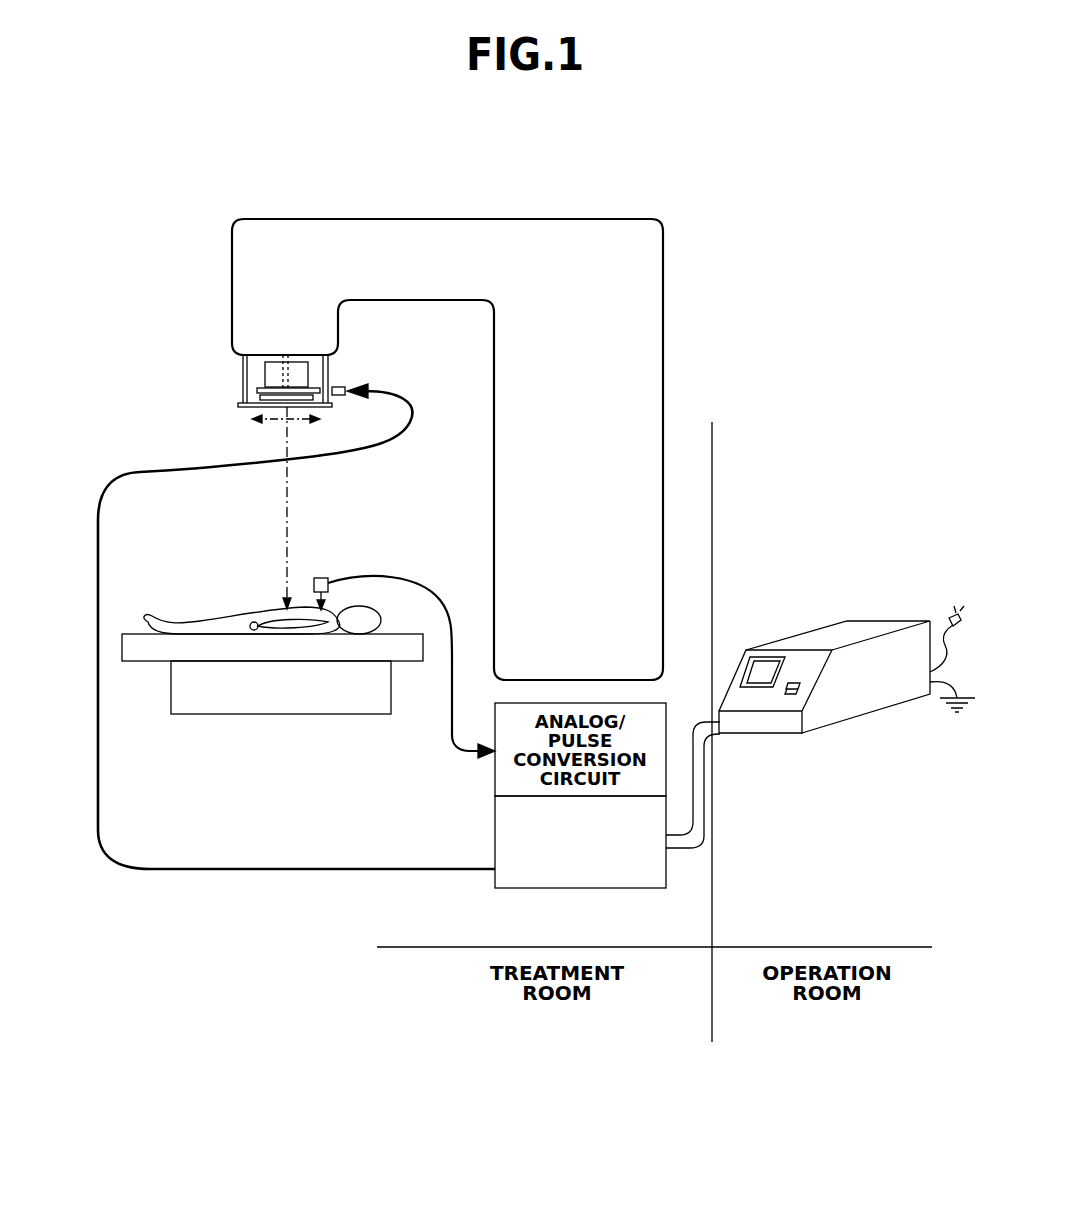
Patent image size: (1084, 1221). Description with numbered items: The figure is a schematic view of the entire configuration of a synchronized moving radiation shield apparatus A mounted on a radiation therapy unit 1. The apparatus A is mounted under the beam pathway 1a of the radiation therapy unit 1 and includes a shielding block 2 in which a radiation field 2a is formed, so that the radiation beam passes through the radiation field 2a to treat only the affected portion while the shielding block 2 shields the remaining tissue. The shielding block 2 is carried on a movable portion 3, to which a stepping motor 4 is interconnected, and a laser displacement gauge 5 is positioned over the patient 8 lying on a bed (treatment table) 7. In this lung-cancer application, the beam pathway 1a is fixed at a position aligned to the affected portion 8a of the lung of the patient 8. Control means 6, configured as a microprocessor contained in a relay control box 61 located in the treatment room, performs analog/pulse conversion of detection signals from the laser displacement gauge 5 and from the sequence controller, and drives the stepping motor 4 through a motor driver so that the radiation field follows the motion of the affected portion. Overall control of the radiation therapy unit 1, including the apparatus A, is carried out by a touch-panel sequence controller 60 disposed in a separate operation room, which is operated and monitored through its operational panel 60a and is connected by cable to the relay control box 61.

The radiation therapy unit 1 is at (232, 257).
The beam pathway 1a is at (266, 360).
The shielding block 2 is at (302, 372).
The radiation field 2a is at (266, 390).
The movable portion 3 is at (226, 404).
The stepping motor 4 is at (337, 397).
The laser displacement gauge 5 is at (323, 578).
The control means 6 is at (683, 692).
The bed (treatment table) 7 is at (231, 700).
The patient 8 is at (246, 610).
The affected portion 8a is at (284, 612).
The touch-panel sequence controller 60 is at (806, 632).
The operational panel 60a is at (762, 692).
The relay control box 61 is at (504, 823).
The synchronized moving radiation shield apparatus A is at (224, 385).